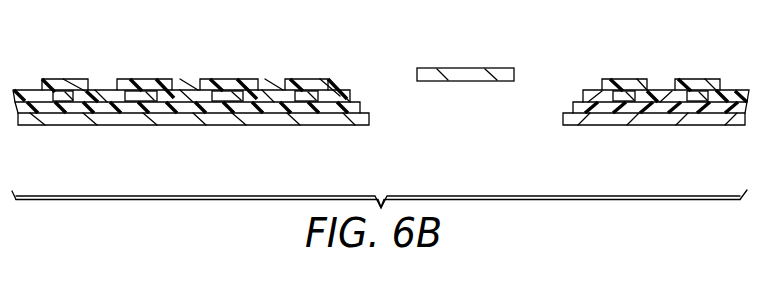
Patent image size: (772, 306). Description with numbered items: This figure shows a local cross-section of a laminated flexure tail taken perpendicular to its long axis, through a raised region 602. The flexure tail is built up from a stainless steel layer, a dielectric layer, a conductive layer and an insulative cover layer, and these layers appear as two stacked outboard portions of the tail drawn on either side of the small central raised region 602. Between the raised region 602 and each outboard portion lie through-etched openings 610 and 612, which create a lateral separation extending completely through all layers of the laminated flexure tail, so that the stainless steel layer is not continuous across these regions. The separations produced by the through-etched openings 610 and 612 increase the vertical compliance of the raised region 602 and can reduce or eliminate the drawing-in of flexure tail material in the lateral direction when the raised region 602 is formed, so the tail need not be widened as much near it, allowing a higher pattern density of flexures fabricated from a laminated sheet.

The raised region 602 is at (461, 68).
The through-etched opening 610 is at (378, 72).
The through-etched opening 612 is at (556, 72).